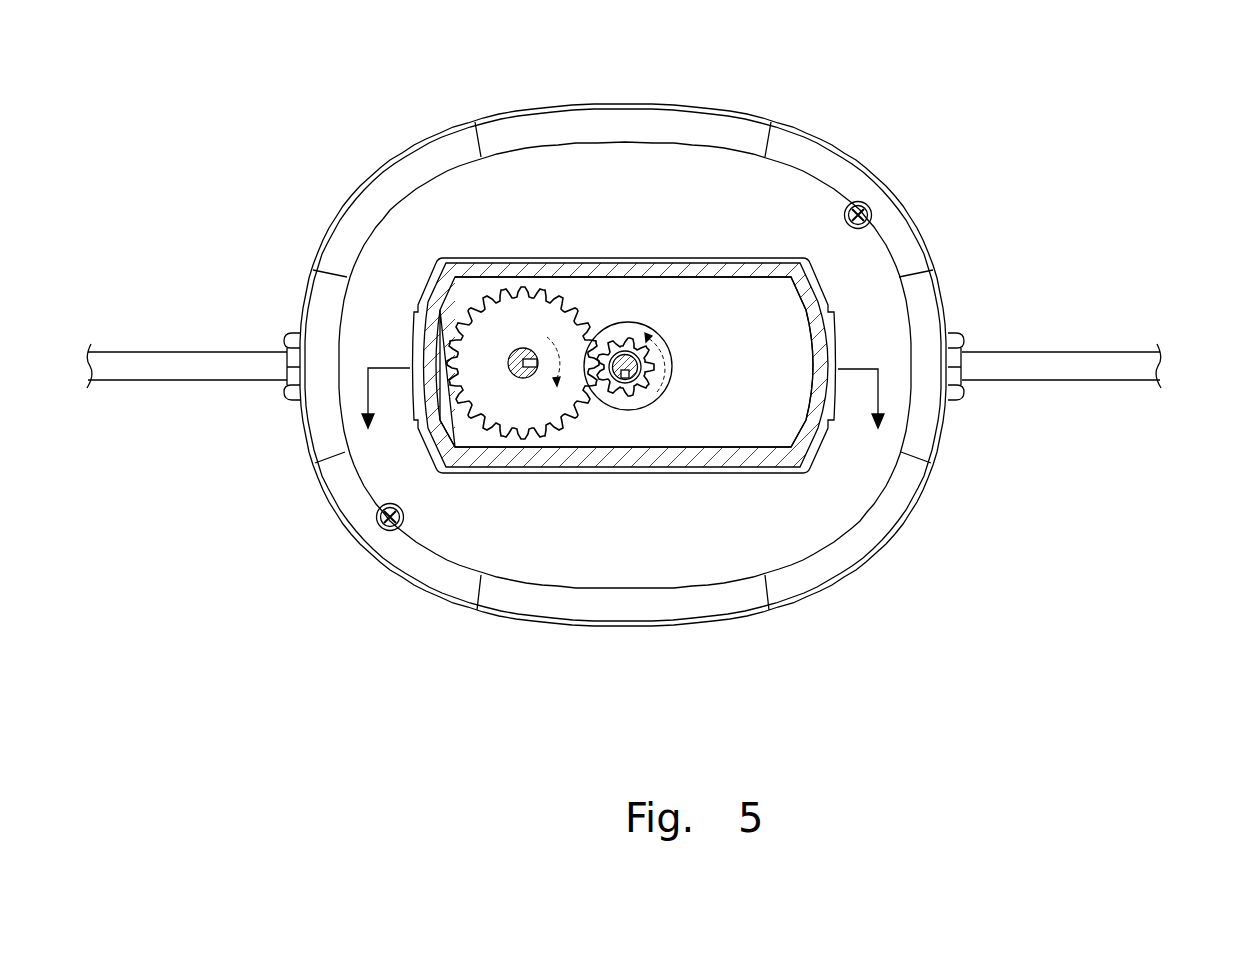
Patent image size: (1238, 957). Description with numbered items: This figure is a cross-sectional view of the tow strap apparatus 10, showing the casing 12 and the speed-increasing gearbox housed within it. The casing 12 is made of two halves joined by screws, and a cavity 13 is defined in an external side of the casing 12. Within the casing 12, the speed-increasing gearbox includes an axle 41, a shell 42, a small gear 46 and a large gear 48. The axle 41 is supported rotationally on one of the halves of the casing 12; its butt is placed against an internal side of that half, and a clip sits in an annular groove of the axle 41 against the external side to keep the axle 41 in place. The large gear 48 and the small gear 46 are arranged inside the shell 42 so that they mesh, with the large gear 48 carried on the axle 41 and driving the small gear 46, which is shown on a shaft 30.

The tow strap apparatus 10 is at (1113, 140).
The casing 12 is at (413, 170).
The cavity 13 is at (631, 475).
The drive shaft 30 is at (625, 355).
The axle 41 is at (520, 360).
The shell 42 is at (625, 462).
The small gear 46 is at (638, 355).
The large gear 48 is at (413, 402).